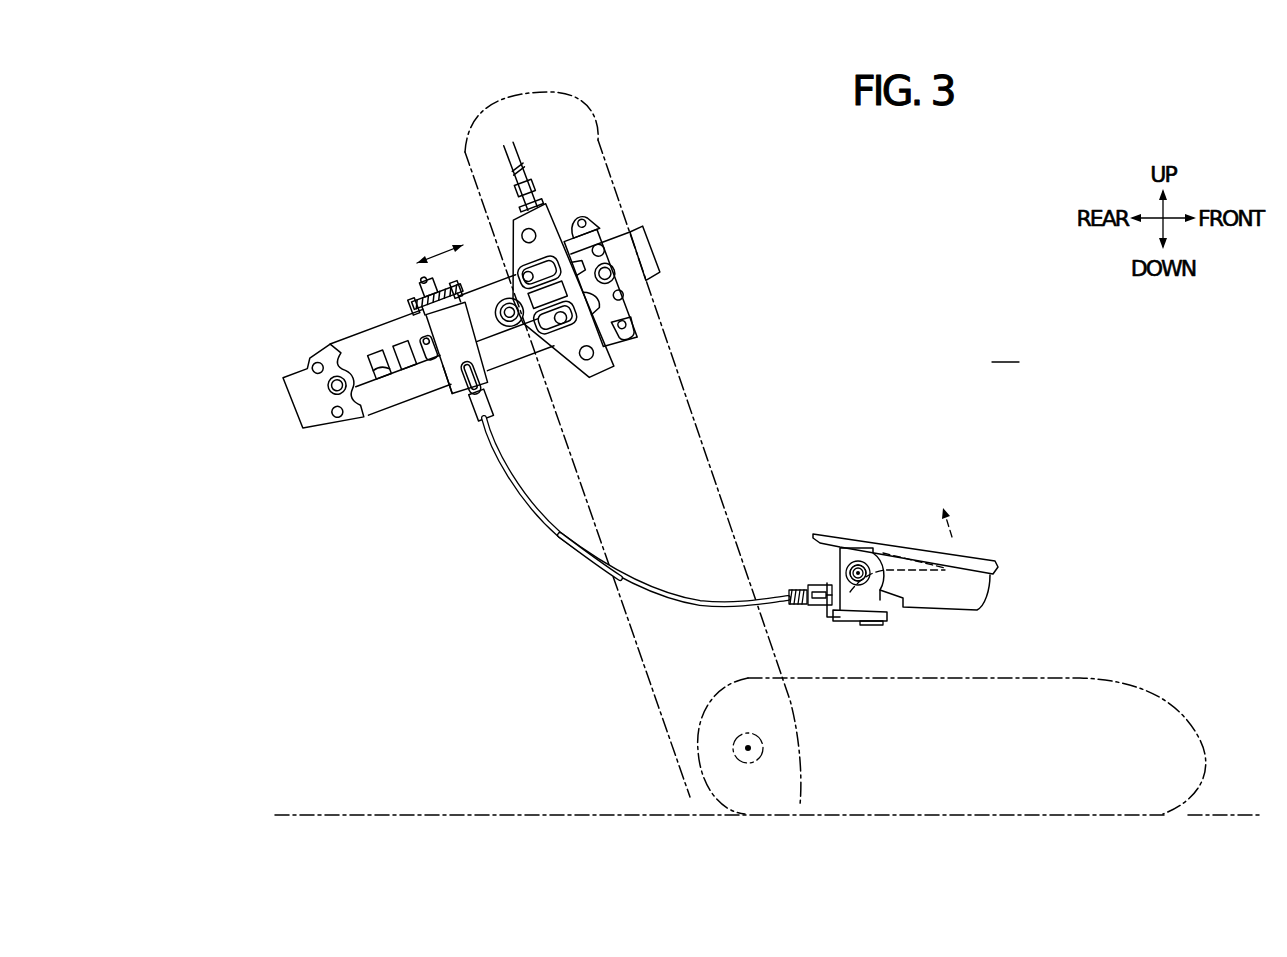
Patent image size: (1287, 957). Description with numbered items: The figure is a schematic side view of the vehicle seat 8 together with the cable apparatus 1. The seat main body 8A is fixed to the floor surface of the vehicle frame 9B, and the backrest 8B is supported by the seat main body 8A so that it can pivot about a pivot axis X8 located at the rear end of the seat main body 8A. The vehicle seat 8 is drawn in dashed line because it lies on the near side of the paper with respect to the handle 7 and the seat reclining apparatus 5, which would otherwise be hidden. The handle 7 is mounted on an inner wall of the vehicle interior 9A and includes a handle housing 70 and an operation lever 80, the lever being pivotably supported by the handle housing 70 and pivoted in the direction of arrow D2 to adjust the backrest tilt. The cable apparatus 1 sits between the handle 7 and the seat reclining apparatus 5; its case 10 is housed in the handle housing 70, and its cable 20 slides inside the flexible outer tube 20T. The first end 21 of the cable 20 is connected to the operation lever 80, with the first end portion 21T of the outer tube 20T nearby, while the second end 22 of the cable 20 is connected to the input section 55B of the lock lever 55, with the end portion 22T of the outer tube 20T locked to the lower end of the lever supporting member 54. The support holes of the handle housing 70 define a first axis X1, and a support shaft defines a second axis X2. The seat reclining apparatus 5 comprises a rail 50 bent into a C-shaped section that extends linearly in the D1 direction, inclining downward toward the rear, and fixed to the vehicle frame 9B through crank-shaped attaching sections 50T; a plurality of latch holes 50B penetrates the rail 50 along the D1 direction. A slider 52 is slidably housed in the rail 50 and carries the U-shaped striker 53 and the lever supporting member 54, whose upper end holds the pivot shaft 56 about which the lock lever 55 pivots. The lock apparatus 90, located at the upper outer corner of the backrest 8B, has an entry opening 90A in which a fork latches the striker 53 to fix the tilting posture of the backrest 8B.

The cable apparatus 1 is at (618, 507).
The seat reclining apparatus 5 is at (492, 325).
The handle 7 is at (971, 555).
The vehicle seat 8 is at (862, 453).
The seat main body 8A is at (1098, 706).
The backrest 8B is at (650, 357).
The vehicle interior 9A is at (1006, 350).
The vehicle frame 9B is at (405, 812).
The case 10 is at (813, 612).
The cable 20 is at (546, 526).
The outer tube 20T is at (597, 558).
The first end 21 is at (845, 622).
The first end portion 21T is at (798, 590).
The second end 22 is at (419, 278).
The end portion 22T is at (476, 414).
The rail 50 is at (397, 420).
The latch holes 50B is at (387, 383).
The attaching sections 50T is at (584, 224).
The slider 52 is at (498, 318).
The striker 53 is at (547, 305).
The lever supporting member 54 is at (466, 392).
The lock lever 55 is at (410, 295).
The input section 55B is at (442, 384).
The pivot shaft 56 is at (406, 306).
The handle housing 70 is at (988, 591).
The operation lever 80 is at (938, 548).
The lock apparatus 90 is at (560, 210).
The entry opening 90A is at (520, 298).
The first axis X1 is at (858, 561).
The second axis X2 is at (858, 573).
The pivot axis X8 is at (752, 748).
The D1 direction D1 is at (440, 244).
The direction of arrow D2 is at (964, 520).